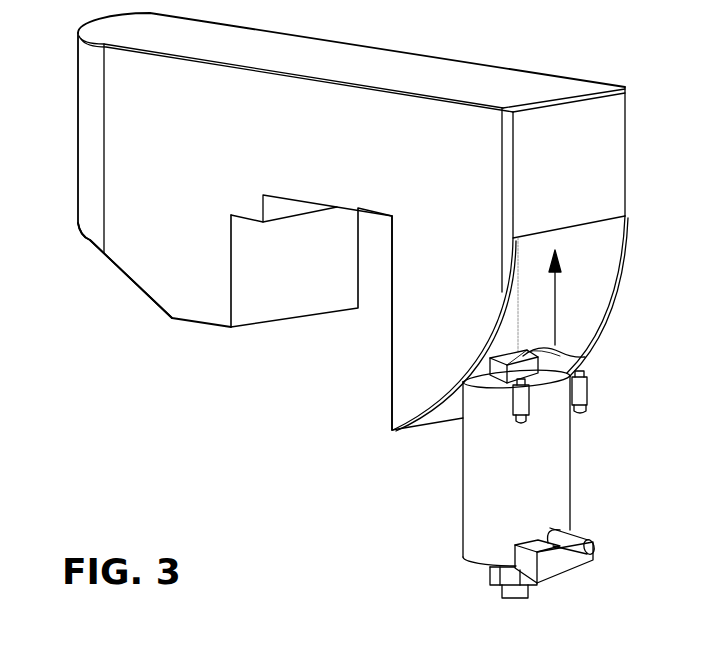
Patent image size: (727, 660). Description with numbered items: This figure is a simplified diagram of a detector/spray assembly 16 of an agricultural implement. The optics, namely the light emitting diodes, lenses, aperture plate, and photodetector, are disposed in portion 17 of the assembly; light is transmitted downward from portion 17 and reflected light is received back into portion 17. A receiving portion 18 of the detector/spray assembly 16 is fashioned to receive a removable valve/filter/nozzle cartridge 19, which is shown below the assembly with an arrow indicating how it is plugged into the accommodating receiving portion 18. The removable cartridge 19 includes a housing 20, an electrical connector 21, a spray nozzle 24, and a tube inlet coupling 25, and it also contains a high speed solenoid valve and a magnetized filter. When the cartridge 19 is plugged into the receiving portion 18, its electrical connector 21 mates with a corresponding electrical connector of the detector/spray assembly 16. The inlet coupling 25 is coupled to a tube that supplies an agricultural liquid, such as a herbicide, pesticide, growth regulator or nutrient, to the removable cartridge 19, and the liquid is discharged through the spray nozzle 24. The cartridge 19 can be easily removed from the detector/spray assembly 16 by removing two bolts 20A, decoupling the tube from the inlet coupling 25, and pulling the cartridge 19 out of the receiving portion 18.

The detector/spray assembly 16 is at (498, 44).
The portion 17 is at (150, 278).
The receiving portion 18 is at (410, 352).
The removable valve/filter/nozzle cartridge 19 is at (588, 461).
The housing 20 is at (480, 479).
The bolts 20A is at (570, 408).
The electrical connector 21 is at (585, 357).
The spray nozzle 24 is at (515, 593).
The tube inlet coupling 25 is at (578, 542).